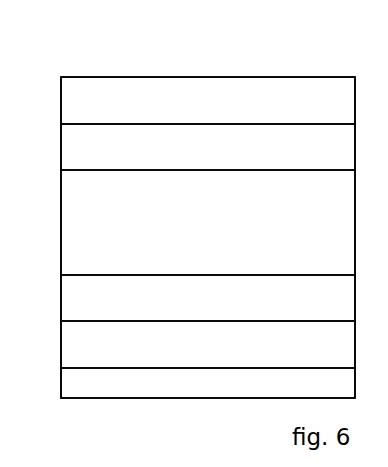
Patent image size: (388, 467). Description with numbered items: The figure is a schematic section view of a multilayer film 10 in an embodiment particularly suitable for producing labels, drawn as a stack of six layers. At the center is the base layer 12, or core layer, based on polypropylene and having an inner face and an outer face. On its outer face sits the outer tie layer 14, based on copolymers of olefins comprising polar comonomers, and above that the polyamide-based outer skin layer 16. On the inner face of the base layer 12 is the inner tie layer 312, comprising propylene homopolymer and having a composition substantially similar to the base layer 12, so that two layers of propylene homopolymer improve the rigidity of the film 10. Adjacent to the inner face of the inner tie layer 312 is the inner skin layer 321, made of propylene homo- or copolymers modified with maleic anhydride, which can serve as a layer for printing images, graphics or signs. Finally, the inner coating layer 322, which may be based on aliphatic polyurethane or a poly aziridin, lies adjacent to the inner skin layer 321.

The multilayer film 10 is at (51, 85).
The outer skin layer 16 is at (195, 112).
The outer tie layer 14 is at (195, 158).
The base layer 12 is at (195, 234).
The inner tie layer 312 is at (190, 310).
The inner skin layer 321 is at (190, 356).
The inner coating layer 322 is at (190, 396).